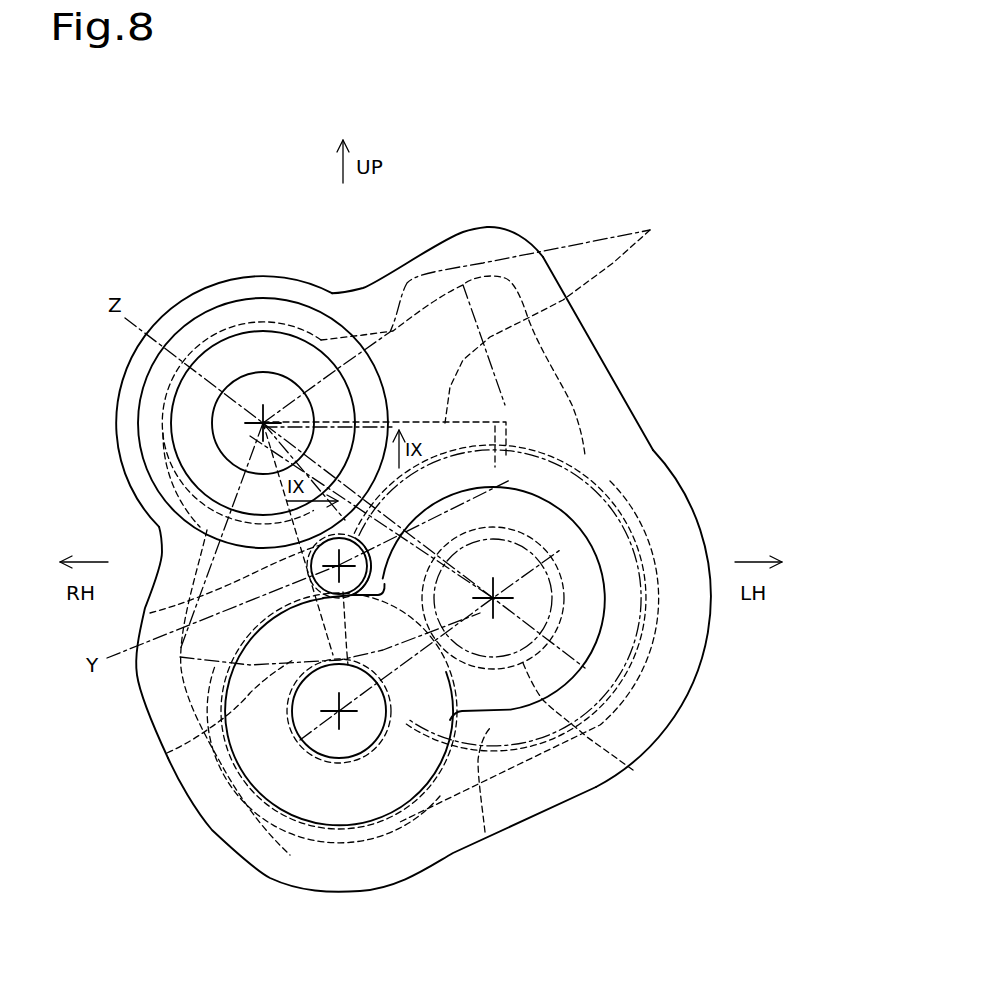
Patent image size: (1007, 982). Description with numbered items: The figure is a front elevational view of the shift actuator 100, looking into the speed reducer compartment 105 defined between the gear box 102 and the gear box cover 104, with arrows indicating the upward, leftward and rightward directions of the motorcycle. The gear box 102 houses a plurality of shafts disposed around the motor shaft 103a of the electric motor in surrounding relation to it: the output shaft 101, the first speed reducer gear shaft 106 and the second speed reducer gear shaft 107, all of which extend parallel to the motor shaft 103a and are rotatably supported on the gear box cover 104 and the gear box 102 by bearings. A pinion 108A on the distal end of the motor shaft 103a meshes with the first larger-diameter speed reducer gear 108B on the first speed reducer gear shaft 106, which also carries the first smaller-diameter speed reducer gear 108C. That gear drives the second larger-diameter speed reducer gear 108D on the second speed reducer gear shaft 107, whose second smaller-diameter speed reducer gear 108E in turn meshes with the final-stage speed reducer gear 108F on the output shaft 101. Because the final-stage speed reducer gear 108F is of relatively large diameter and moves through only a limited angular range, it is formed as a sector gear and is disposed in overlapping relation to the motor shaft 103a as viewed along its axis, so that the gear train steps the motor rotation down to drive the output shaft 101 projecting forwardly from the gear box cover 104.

The shift actuator 100 is at (565, 158).
The output shaft 101 is at (255, 373).
The gear box 102 is at (672, 477).
The motor shaft 103a is at (118, 642).
The gear box cover 104 is at (633, 446).
The speed reducer compartment 105 is at (560, 414).
The first speed reducer gear shaft 106 is at (370, 726).
The second speed reducer gear shaft 107 is at (574, 598).
The pinion 108A is at (150, 613).
The first larger-diameter speed reducer gear 108B is at (167, 753).
The first smaller-diameter speed reducer gear 108C is at (237, 793).
The second larger-diameter speed reducer gear 108D is at (485, 832).
The second smaller-diameter speed reducer gear 108E is at (633, 770).
The final-stage speed reducer gear 108F is at (573, 453).